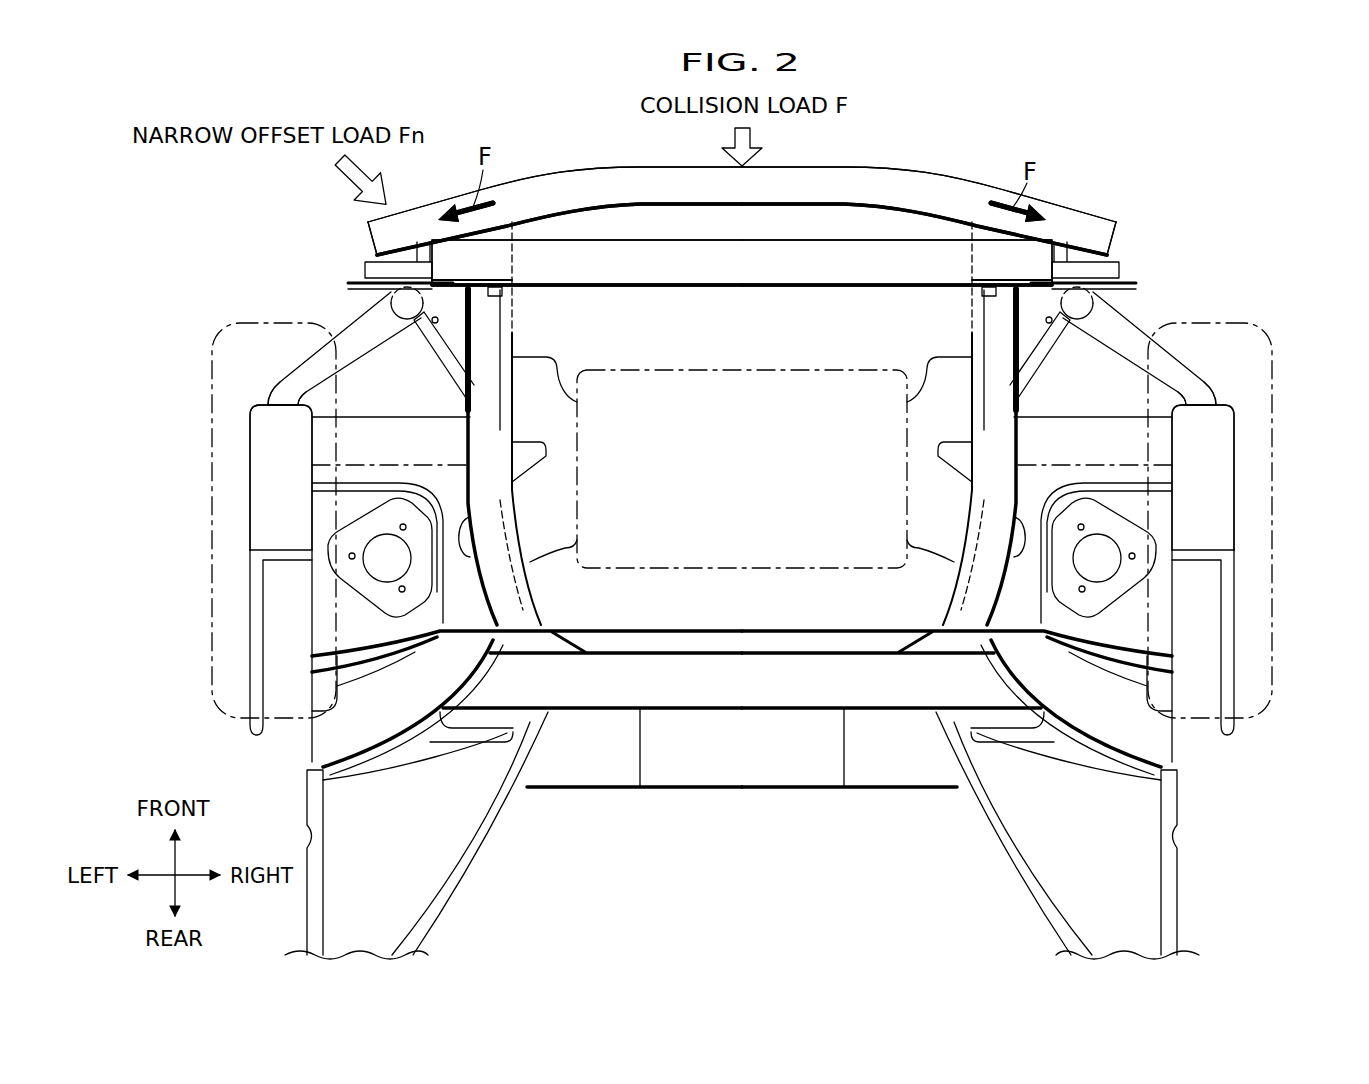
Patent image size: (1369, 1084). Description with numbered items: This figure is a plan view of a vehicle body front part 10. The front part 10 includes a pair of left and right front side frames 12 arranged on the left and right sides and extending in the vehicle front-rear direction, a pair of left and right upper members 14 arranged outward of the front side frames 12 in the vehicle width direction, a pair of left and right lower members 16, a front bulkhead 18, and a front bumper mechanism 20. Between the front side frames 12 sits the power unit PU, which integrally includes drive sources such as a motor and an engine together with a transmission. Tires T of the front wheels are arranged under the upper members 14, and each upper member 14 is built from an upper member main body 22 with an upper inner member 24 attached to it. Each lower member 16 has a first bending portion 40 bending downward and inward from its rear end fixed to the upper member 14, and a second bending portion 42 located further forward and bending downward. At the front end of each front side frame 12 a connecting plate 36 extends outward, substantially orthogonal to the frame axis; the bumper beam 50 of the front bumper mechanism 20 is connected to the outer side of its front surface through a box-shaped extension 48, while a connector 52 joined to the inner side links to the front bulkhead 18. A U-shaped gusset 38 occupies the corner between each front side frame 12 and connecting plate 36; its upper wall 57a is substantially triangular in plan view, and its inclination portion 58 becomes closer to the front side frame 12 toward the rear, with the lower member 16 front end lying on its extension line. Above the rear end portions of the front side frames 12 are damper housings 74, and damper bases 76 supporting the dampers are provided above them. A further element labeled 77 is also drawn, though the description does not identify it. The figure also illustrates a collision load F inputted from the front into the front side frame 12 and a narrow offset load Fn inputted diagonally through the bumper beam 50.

The vehicle body front part 10 is at (1220, 207).
The front side frame 12 is at (520, 328).
The upper member 14 is at (245, 620).
The lower member 16 is at (340, 316).
The front bulkhead 18 is at (768, 232).
The front bumper mechanism 20 is at (599, 162).
The upper member main body 22 is at (248, 647).
The upper inner member 24 is at (250, 477).
The connecting plate 36 is at (360, 272).
The gusset 38 is at (435, 355).
The first bending portion 40 is at (283, 380).
The second bending portion 42 is at (404, 292).
The extension 48 is at (355, 268).
The bumper beam 50 is at (682, 168).
The connector 52 is at (493, 262).
The upper wall 57a is at (449, 330).
The inclination portion 58 is at (428, 338).
The damper housing 74 is at (470, 590).
The damper base 76 is at (330, 550).
The suspension member 77 is at (753, 655).
The tire T is at (210, 367).
The power unit PU is at (717, 491).